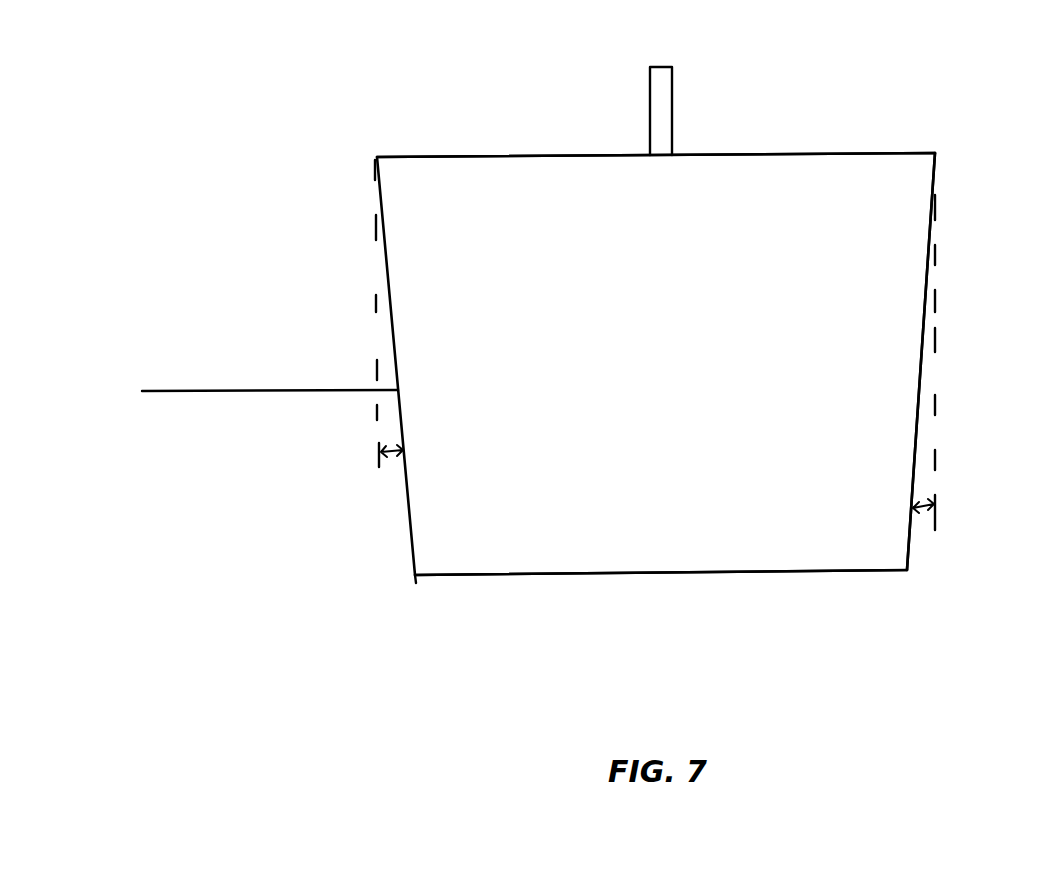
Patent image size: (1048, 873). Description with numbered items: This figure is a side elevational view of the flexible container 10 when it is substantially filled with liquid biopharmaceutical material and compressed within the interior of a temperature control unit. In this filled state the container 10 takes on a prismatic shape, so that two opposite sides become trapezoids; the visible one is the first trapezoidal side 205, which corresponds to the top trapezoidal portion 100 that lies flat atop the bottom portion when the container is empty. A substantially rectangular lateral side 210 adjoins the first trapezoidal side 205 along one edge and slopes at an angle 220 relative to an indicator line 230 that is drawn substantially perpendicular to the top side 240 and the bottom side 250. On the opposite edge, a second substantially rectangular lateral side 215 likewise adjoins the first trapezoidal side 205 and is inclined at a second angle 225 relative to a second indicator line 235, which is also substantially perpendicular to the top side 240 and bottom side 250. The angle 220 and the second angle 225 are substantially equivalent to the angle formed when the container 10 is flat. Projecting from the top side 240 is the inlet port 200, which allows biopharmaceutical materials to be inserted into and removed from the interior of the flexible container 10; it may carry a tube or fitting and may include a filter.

The flexible container 10 is at (443, 577).
The top trapezoidal portion 100 is at (582, 378).
The inlet port 200 is at (673, 85).
The first trapezoidal side 205 is at (751, 403).
The substantially rectangular lateral side 210 is at (921, 372).
The second substantially rectangular lateral side 215 is at (231, 388).
The angle 220 is at (927, 516).
The second angle 225 is at (392, 461).
The indicator line 230 is at (935, 340).
The second indicator line 235 is at (377, 303).
The top side 240 is at (790, 152).
The bottom side 250 is at (713, 573).